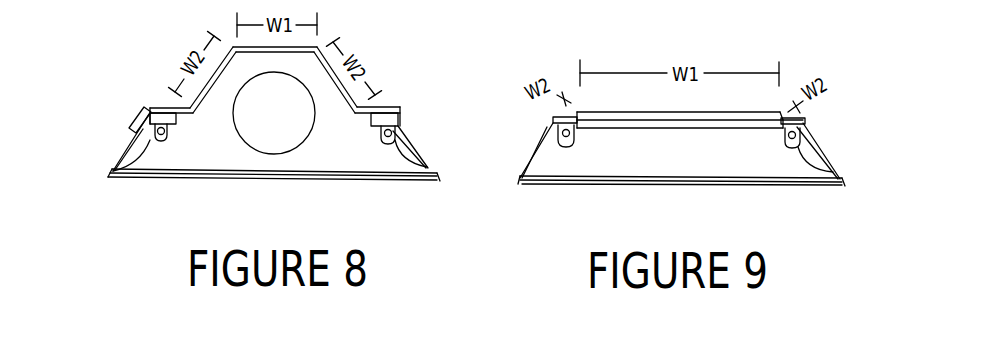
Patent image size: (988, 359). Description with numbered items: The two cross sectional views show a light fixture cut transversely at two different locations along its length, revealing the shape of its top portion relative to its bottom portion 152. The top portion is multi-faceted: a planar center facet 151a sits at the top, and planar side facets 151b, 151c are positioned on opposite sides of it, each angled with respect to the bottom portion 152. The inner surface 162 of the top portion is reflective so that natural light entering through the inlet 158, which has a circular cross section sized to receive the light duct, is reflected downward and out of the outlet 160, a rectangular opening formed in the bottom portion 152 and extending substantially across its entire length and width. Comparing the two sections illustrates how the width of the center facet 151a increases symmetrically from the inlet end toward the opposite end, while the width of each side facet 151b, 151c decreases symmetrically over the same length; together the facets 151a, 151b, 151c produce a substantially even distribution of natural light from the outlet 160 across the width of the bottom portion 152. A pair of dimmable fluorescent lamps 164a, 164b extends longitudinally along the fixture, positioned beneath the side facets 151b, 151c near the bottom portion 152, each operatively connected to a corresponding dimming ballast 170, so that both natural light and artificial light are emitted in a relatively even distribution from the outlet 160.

In FIG. 8, the center facet 151a is at (320, 46).
In FIG. 8, the side facet 151b is at (212, 97).
In FIG. 8, the side facet 151c is at (387, 106).
In FIG. 8, the bottom portion 152 is at (148, 174).
In FIG. 9, the bottom portion 152 is at (545, 181).
In FIG. 8, the inlet 158 is at (290, 126).
In FIG. 8, the outlet 160 is at (345, 200).
In FIG. 9, the outlet 160 is at (750, 205).
In FIG. 8, the inner surface 162 is at (334, 94).
In FIG. 8, the dimmable fluorescent lamp 164a is at (150, 140).
In FIG. 9, the dimmable fluorescent lamp 164a is at (553, 121).
In FIG. 8, the dimmable fluorescent lamp 164b is at (426, 166).
In FIG. 9, the dimmable fluorescent lamp 164b is at (822, 172).
In FIG. 8, the dimming ballast 170 is at (140, 110).